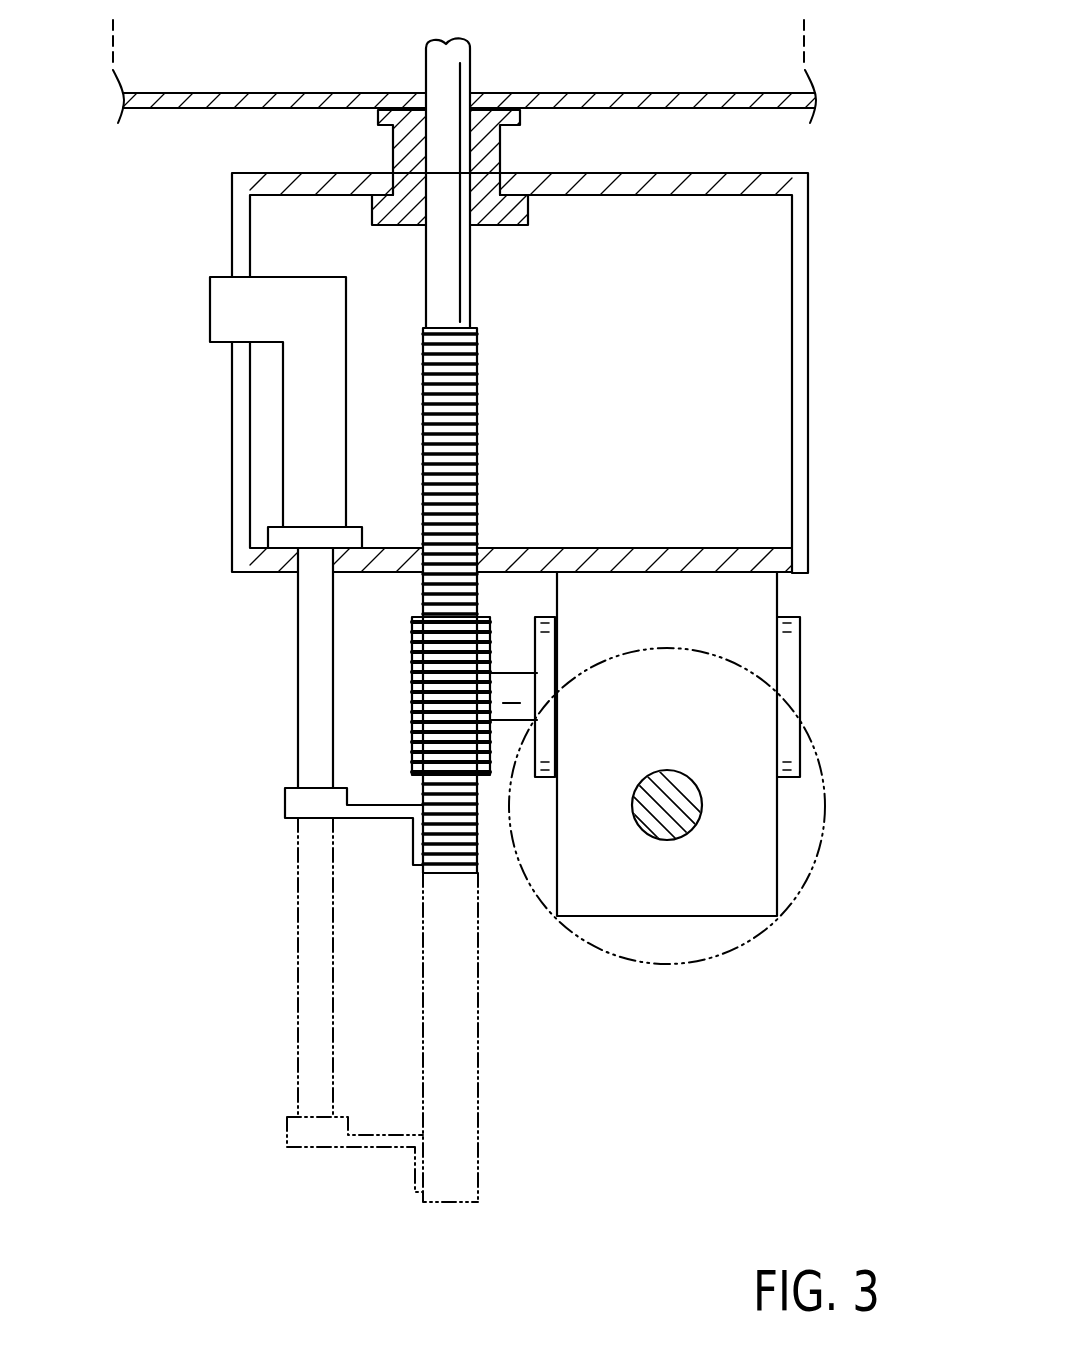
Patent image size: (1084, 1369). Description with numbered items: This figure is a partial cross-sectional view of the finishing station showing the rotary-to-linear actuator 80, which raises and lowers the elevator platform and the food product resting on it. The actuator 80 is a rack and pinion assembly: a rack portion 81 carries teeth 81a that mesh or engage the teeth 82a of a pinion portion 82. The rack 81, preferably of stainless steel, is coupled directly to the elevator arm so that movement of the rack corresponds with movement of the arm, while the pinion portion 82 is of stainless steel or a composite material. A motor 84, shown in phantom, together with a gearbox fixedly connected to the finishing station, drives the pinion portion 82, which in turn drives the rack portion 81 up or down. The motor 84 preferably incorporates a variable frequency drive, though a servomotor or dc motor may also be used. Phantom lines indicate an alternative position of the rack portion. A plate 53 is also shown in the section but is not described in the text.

The mounting plate 53 is at (180, 110).
The rotary-to-linear actuator 80 is at (495, 847).
The rack portion 81 is at (487, 380).
The teeth 81a is at (463, 431).
The pinion portion 82 is at (412, 675).
The teeth 82a is at (420, 695).
The motor 84 is at (823, 764).